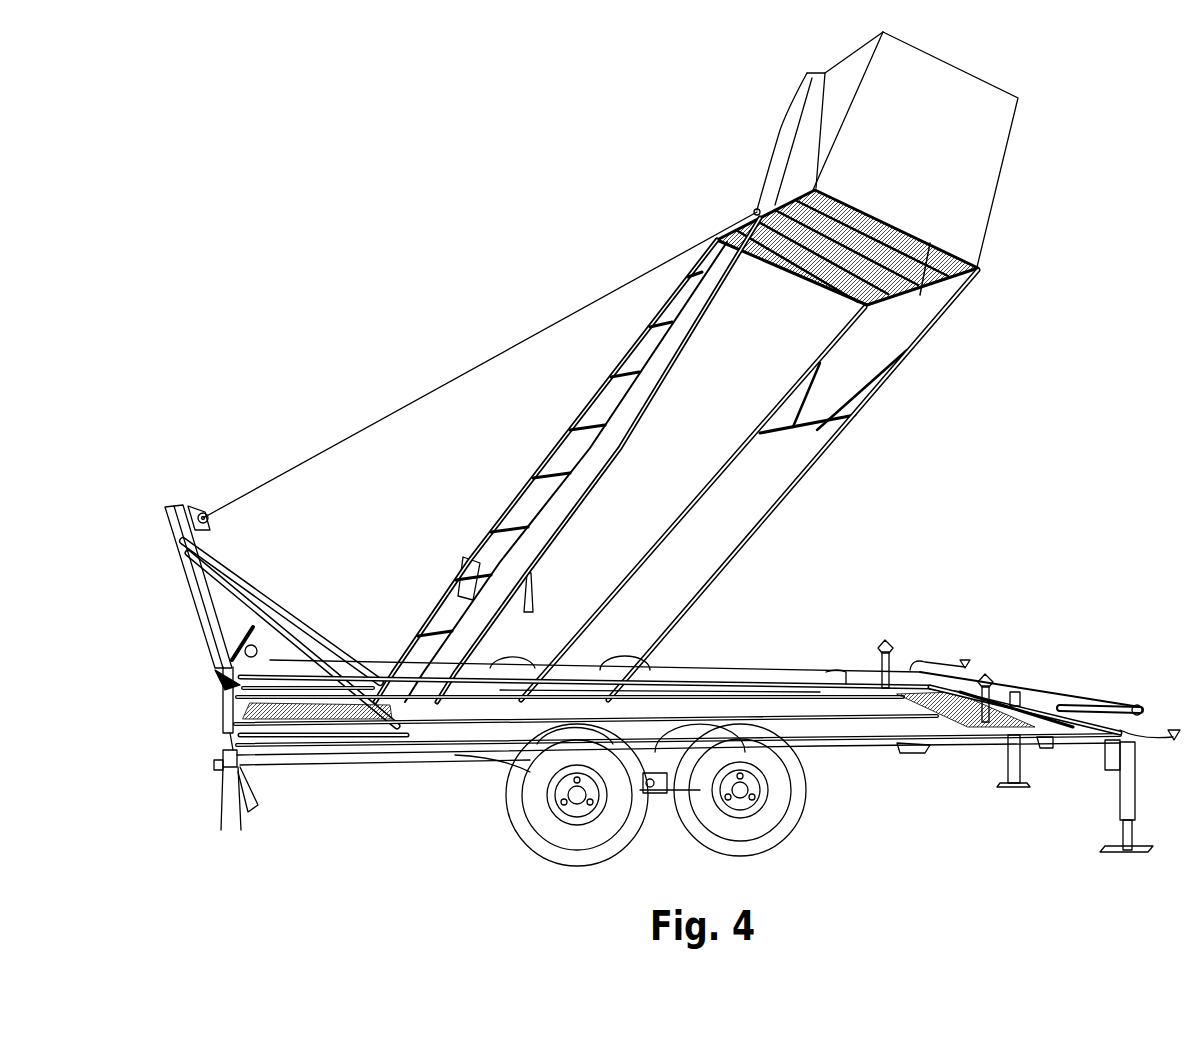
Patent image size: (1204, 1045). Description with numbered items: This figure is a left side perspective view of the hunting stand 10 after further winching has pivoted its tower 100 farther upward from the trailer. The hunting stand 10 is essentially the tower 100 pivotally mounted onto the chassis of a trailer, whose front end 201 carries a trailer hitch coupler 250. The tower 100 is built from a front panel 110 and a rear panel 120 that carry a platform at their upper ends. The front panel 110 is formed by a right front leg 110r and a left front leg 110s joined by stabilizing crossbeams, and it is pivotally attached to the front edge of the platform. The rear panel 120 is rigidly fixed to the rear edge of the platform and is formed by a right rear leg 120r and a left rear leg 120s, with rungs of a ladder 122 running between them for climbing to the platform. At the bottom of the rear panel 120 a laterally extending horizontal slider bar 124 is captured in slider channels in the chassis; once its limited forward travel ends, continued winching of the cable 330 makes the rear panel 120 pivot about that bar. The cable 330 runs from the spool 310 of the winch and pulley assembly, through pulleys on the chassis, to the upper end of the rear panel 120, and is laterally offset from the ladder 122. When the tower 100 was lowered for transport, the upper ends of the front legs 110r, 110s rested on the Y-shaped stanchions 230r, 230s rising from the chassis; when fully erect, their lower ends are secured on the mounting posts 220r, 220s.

The hunting stand 10 is at (553, 152).
The tower 100 is at (992, 396).
The front panel 110 is at (882, 458).
The right front leg 110r is at (783, 393).
The left front leg 110s is at (820, 467).
The rear panel 120 is at (548, 431).
The right rear leg 120r is at (505, 510).
The left rear leg 120s is at (670, 398).
The ladder 122 is at (625, 375).
The cable 330 is at (385, 412).
The spool 310 is at (217, 679).
The horizontal slider bar 124 is at (347, 735).
The front end 201 is at (1000, 692).
The right mounting post 220r is at (855, 672).
The left mounting post 220s is at (955, 730).
The right Y-shaped stanchion 230r is at (888, 665).
The left Y-shaped stanchion 230s is at (973, 745).
The trailer hitch coupler 250 is at (1130, 705).